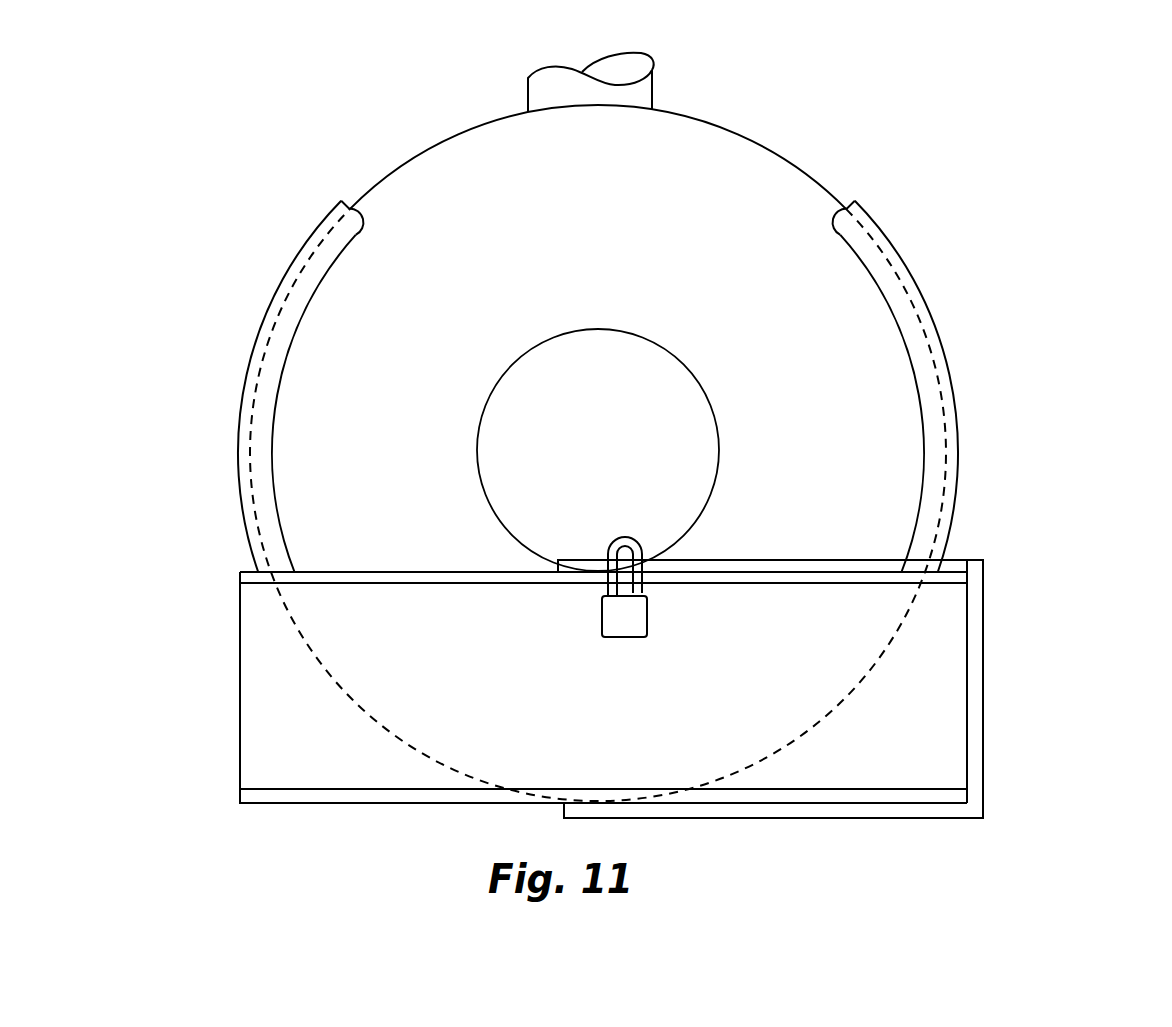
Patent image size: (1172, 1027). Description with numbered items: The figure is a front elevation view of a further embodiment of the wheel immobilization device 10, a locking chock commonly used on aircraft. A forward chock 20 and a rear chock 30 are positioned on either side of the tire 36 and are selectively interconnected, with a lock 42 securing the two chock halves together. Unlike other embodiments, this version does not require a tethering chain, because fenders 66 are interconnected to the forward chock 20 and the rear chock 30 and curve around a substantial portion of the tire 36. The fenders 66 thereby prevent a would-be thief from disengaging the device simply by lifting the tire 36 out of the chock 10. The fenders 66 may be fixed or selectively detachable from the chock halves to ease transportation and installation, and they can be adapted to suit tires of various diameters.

The wheel immobilization device 10 is at (1010, 582).
The forward chock 20 is at (983, 703).
The rear chock 30 is at (240, 657).
The tire 36 is at (777, 148).
The lock 42 is at (647, 614).
The fenders 66 is at (940, 338).